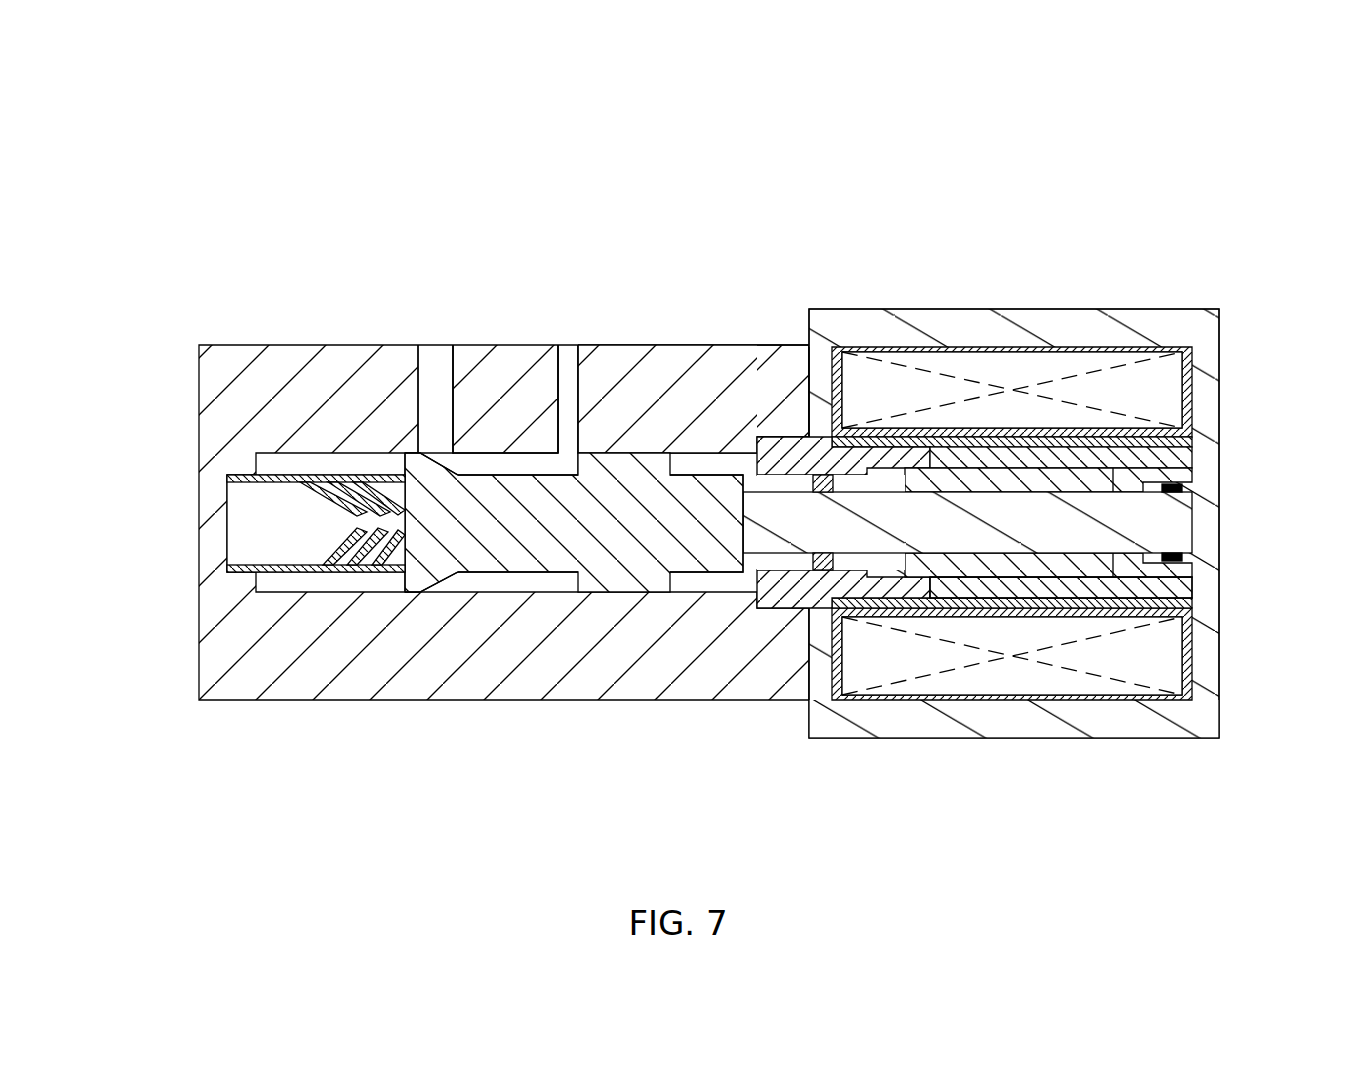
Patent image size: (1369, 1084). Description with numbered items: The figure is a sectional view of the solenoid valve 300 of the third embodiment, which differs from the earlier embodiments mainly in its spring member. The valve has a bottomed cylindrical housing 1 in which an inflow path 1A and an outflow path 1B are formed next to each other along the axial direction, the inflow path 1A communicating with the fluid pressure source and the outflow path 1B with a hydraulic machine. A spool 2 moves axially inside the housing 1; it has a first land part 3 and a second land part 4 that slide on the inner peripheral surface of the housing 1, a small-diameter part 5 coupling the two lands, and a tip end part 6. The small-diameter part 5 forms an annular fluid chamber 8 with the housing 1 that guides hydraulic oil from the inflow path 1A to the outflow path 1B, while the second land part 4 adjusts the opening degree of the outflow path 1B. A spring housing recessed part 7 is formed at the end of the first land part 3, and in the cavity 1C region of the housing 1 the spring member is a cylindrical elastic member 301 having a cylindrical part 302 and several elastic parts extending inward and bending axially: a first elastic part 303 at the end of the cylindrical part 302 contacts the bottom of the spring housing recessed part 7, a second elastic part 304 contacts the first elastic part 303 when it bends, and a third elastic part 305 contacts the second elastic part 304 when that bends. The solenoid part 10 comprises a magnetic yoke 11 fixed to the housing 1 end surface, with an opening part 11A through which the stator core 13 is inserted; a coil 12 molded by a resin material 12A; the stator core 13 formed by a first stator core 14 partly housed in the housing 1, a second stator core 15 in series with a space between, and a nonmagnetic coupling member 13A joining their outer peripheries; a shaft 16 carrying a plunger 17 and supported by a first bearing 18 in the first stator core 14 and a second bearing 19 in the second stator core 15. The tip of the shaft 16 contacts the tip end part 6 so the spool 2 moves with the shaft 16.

The solenoid valve 300 is at (1256, 155).
The solenoid part 10 is at (1140, 259).
The housing 1 is at (358, 345).
The inflow path 1A is at (435, 370).
The outflow path 1B is at (567, 372).
The cavity 1C is at (232, 522).
The spring housing recessed part 7 is at (313, 478).
The fluid chamber 8 is at (508, 465).
The yoke 11 is at (1077, 330).
The opening part 11A is at (818, 440).
The coil 12 is at (1163, 397).
The resin material 12A is at (1192, 368).
The stator core 13 is at (974, 408).
The coupling member 13A is at (921, 440).
The first stator core 14 is at (876, 462).
The second stator core 15 is at (975, 437).
The shaft 16 is at (1165, 533).
The plunger 17 is at (1030, 562).
The first bearing 18 is at (822, 572).
The second bearing 19 is at (1178, 565).
The spool 2 is at (540, 572).
The first land part 3 is at (405, 580).
The second land part 4 is at (615, 582).
The small-diameter part 5 is at (487, 568).
The tip end part 6 is at (717, 566).
The cylindrical elastic member 301 is at (306, 663).
The cylindrical part 302 is at (258, 580).
The first elastic part 303 is at (380, 562).
The second elastic part 304 is at (357, 566).
The third elastic part 305 is at (330, 575).